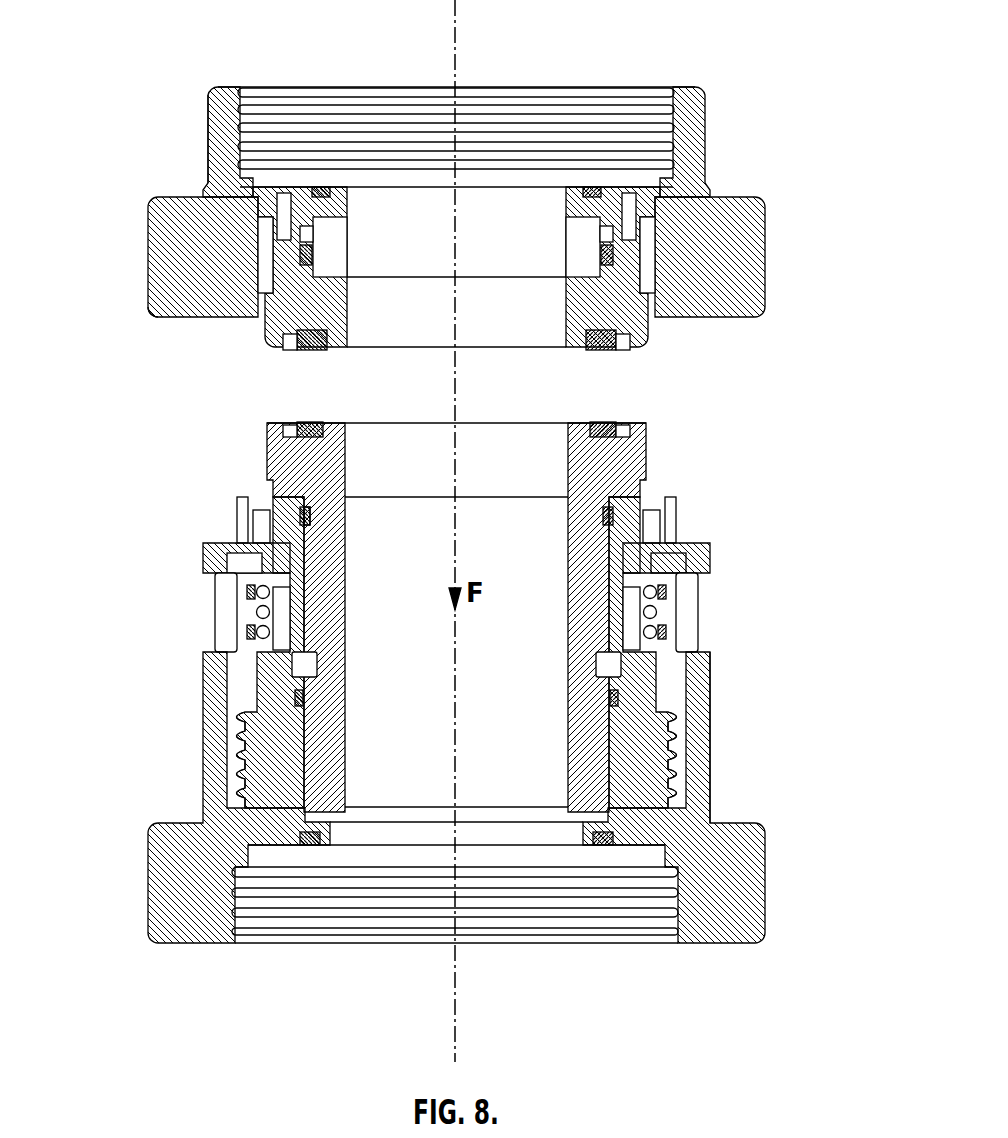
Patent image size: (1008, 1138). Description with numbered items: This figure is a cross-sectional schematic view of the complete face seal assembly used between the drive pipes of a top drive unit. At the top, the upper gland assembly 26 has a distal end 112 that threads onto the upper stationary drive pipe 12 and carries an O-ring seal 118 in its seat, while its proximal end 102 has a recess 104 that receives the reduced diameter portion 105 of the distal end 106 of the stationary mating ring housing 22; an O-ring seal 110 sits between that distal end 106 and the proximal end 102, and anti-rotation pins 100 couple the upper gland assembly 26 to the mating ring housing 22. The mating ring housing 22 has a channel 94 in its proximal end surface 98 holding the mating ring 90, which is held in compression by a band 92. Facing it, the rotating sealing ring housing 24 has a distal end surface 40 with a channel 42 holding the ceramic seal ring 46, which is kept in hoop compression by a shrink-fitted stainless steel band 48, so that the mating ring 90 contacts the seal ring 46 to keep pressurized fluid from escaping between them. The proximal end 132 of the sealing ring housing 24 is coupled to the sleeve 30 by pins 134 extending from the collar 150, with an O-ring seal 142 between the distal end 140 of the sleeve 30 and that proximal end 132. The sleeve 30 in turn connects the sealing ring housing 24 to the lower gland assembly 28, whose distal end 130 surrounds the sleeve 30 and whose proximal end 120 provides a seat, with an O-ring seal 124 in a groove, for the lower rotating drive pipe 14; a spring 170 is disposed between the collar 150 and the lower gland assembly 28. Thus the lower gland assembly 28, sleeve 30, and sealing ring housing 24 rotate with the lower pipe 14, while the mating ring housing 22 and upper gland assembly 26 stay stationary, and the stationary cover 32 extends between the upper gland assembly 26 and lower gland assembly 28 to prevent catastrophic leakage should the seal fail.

The upper stationary drive pipe 12 is at (617, 122).
The lower rotating drive pipe 14 is at (615, 935).
The stationary mating ring housing 22 is at (277, 308).
The rotating sealing ring housing 24 is at (635, 470).
The upper gland assembly 26 is at (148, 298).
The lower gland assembly 28 is at (155, 870).
The sleeve 30 is at (585, 608).
The stationary cover 32 is at (700, 682).
The distal end surface 40 is at (332, 424).
The channel 42 is at (308, 426).
The ceramic seal ring 46 is at (607, 423).
The stainless steel band 48 is at (632, 424).
The mating ring 90 is at (300, 357).
The band 92 is at (292, 347).
The channel 94 is at (648, 300).
The proximal end surface 98 is at (630, 357).
The anti-rotation pins 100 is at (286, 196).
The proximal end 102 is at (168, 220).
The recess 104 is at (267, 237).
The reduced diameter portion 105 is at (314, 228).
The distal end 106 is at (313, 240).
The O-ring seal 110 is at (313, 257).
The distal end 112 is at (225, 108).
The O-ring seal 118 is at (325, 188).
The proximal end 120 is at (760, 870).
The O-ring seal 124 is at (310, 840).
The distal end 130 is at (648, 758).
The proximal end 132 is at (290, 490).
The pins 134 is at (305, 666).
The distal end 140 is at (347, 514).
The O-ring seal 142 is at (312, 519).
The collar 150 is at (664, 567).
The spring 170 is at (667, 584).